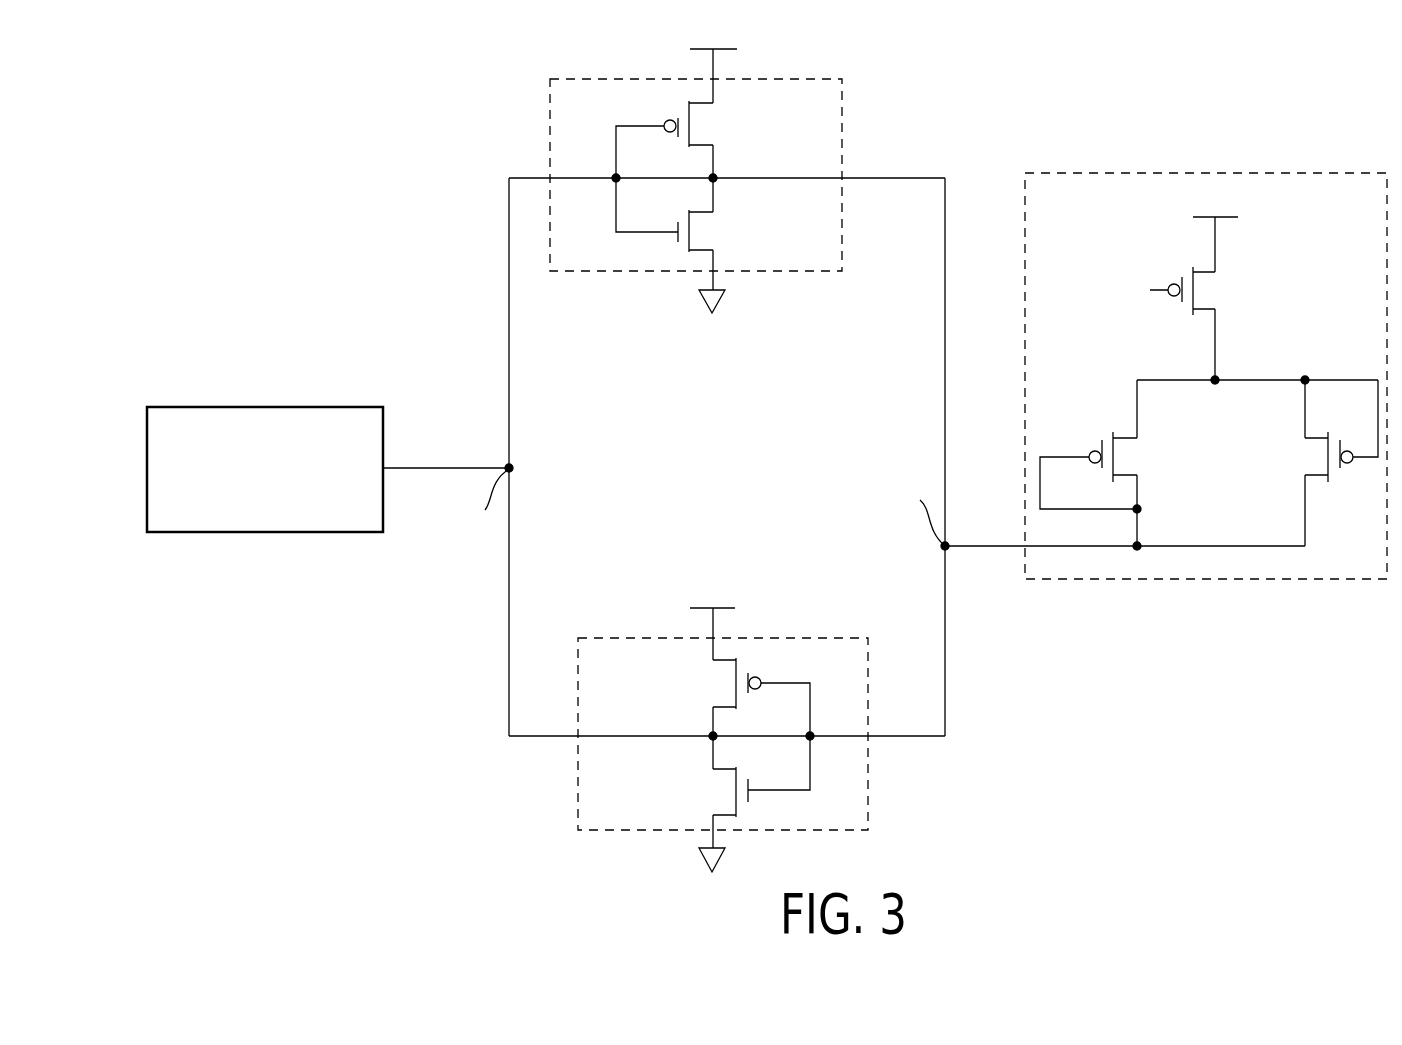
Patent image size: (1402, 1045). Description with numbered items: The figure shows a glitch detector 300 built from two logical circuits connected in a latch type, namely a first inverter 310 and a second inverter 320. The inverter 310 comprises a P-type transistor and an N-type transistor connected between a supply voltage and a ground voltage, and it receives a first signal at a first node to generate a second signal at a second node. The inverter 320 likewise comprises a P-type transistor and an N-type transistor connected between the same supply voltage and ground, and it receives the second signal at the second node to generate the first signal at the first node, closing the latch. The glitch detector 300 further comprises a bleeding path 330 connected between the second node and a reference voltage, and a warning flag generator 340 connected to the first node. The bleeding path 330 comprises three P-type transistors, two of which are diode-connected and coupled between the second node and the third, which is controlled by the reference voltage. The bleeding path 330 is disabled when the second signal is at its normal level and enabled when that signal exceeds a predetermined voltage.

The glitch detector 300 is at (292, 128).
The inverter 310 is at (842, 105).
The inverter 320 is at (868, 662).
The bleeding path 330 is at (1325, 173).
The warning flag generator 340 is at (384, 432).